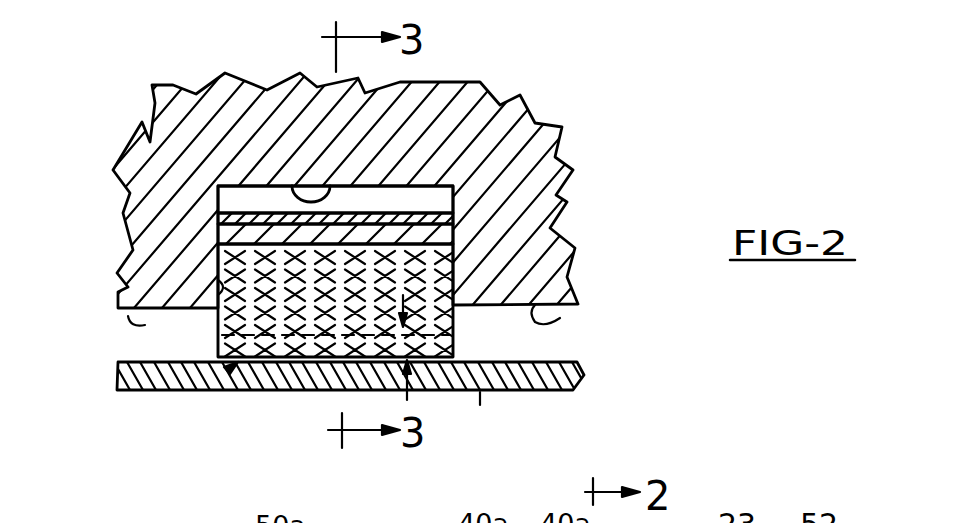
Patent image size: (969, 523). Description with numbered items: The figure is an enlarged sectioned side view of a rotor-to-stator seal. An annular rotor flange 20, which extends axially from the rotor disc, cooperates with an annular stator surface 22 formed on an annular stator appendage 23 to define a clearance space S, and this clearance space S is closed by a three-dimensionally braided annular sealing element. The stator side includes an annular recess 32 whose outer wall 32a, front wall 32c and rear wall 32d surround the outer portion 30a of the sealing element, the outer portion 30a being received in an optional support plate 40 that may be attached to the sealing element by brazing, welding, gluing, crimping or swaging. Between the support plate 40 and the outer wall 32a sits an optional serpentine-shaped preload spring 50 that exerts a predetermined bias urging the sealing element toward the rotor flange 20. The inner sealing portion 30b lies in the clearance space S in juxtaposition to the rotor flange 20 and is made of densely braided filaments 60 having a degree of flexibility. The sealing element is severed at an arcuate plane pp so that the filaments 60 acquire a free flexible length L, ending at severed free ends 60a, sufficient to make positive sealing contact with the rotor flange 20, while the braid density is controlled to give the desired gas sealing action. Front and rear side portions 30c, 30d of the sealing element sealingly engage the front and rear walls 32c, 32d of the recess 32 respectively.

The annular rotor flange 20 is at (522, 370).
The annular stator portion or surface 22 is at (548, 323).
The annular stator appendage 23 is at (470, 107).
The outer portion 30a is at (405, 272).
The inner sealing portion 30b is at (278, 345).
The front side portion 30c is at (218, 333).
The rear side portion 30d is at (455, 323).
The annular recess 32 is at (417, 195).
The outer wall 32a is at (300, 196).
The front wall 32c is at (214, 289).
The rear wall 32d is at (452, 298).
The support plate 40 is at (214, 232).
The serpentine-shaped spring 50 is at (258, 213).
The braided filaments 60 is at (332, 350).
The free ends 60a is at (447, 362).
The plane pp is at (233, 368).
The free length L is at (481, 414).
The clearance space S is at (560, 338).